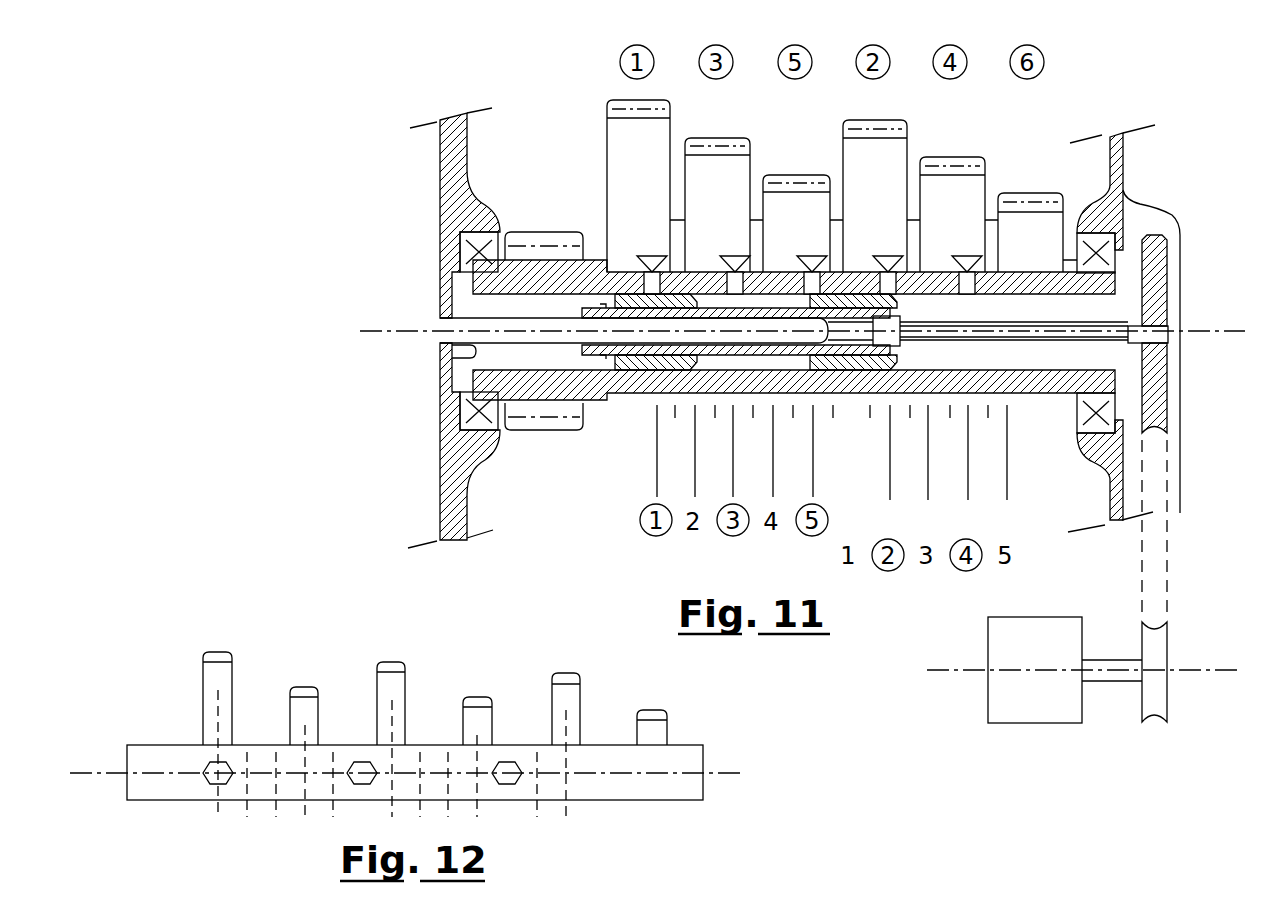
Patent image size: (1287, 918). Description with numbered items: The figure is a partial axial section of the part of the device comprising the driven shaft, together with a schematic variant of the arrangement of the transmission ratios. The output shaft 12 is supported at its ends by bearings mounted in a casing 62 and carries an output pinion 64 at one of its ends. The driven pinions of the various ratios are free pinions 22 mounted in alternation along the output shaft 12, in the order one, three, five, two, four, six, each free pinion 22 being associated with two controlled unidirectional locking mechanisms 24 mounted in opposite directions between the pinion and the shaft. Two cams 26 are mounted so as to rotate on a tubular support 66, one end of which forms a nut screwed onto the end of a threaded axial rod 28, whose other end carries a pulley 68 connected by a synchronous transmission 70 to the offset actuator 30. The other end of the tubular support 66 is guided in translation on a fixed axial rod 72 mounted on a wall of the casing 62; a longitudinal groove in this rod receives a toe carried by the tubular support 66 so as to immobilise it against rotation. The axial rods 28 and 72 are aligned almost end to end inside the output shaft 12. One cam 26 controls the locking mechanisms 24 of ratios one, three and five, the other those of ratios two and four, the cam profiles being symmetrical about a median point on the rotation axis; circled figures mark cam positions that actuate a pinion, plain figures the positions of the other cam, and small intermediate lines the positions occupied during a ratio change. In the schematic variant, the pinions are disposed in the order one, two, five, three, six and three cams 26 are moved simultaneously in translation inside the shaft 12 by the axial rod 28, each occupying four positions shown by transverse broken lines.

In FIG. 11, the output shaft 12 is at (640, 398).
In FIG. 12, the output shaft 12 is at (165, 745).
In FIG. 12, the free pinion 22 is at (204, 692).
In FIG. 11, the controlled unidirectional locking mechanism 24 is at (653, 256).
In FIG. 11, the cam 26 is at (612, 293).
In FIG. 12, the cam 26 is at (205, 774).
In FIG. 11, the threaded axial rod 28 is at (1102, 347).
In FIG. 12, the threaded axial rod 28 is at (730, 773).
In FIG. 11, the actuator 30 is at (988, 632).
In FIG. 11, the casing 62 is at (456, 214).
In FIG. 11, the output pinion 64 is at (560, 232).
In FIG. 11, the tubular support 66 is at (582, 352).
In FIG. 11, the pulley 68 is at (1182, 266).
In FIG. 11, the synchronous transmission 70 is at (1168, 572).
In FIG. 11, the fixed axial rod 72 is at (440, 360).